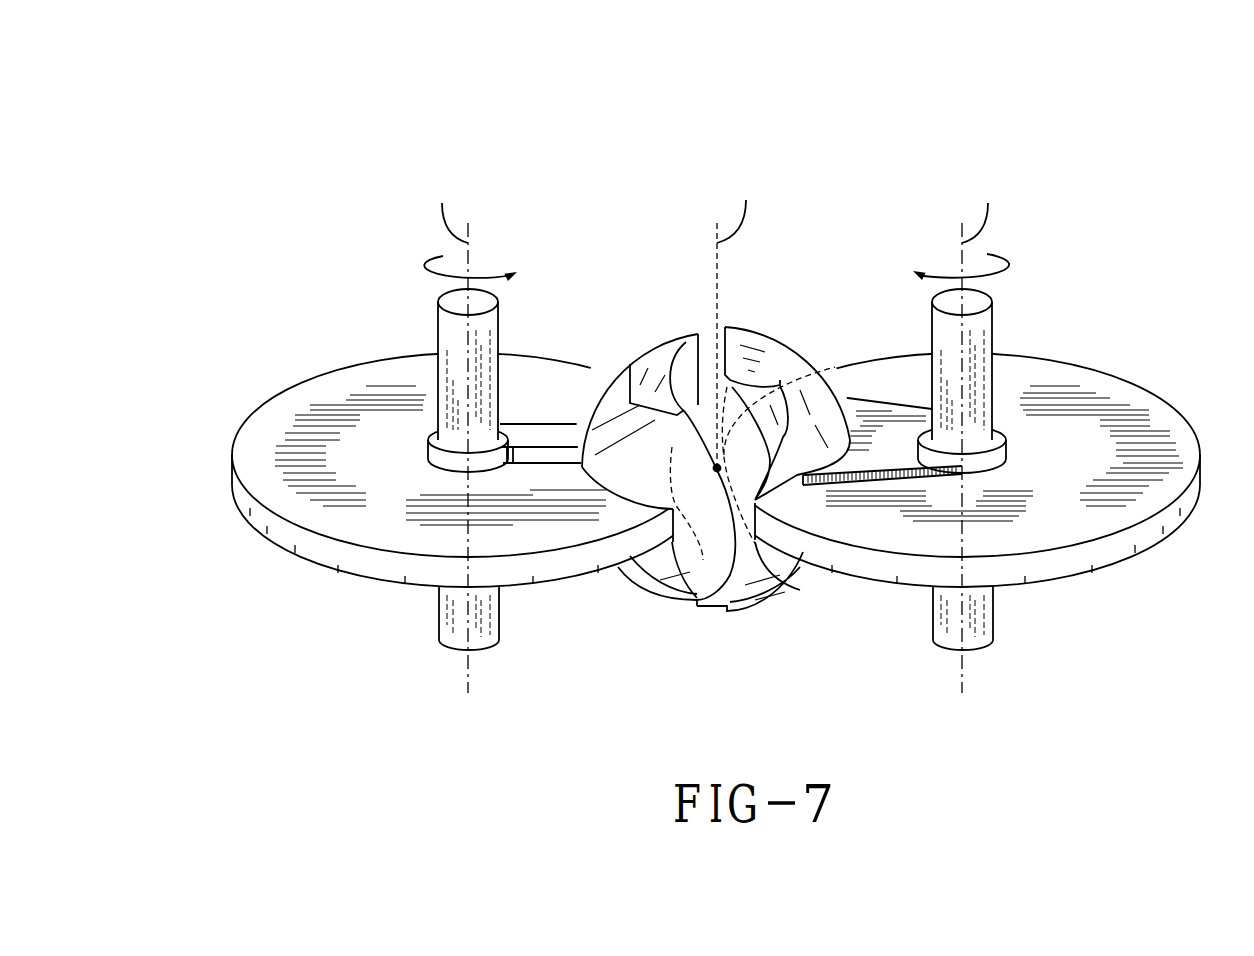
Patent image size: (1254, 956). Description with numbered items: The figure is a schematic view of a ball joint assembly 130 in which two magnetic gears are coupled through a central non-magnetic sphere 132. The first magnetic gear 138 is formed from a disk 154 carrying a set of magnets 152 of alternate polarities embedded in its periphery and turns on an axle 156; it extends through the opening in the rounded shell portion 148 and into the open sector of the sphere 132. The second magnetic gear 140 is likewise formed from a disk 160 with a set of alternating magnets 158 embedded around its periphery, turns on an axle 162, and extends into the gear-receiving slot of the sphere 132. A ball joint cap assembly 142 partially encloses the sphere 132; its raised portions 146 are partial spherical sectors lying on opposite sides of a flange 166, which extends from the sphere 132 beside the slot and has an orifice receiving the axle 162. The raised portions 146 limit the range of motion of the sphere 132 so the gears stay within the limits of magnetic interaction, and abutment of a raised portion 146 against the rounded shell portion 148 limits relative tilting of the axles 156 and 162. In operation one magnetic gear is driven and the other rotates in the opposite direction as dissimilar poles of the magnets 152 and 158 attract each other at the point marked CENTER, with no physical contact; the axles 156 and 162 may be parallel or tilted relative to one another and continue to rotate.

The ball joint assembly 130 is at (718, 371).
The sphere 132 is at (721, 458).
The magnetic gear 138 is at (443, 464).
The magnetic gear 140 is at (988, 463).
The ball joint cap assembly 142 is at (648, 597).
The raised portions 146 is at (805, 357).
The rounded shell portion 148 is at (640, 350).
The set of magnets 152 is at (232, 445).
The disk 154 is at (285, 540).
The axle 156 is at (440, 330).
The set of alternating magnets 158 is at (1200, 440).
The disk 160 is at (1147, 540).
The axle 162 is at (992, 330).
The flange 166 is at (1010, 445).